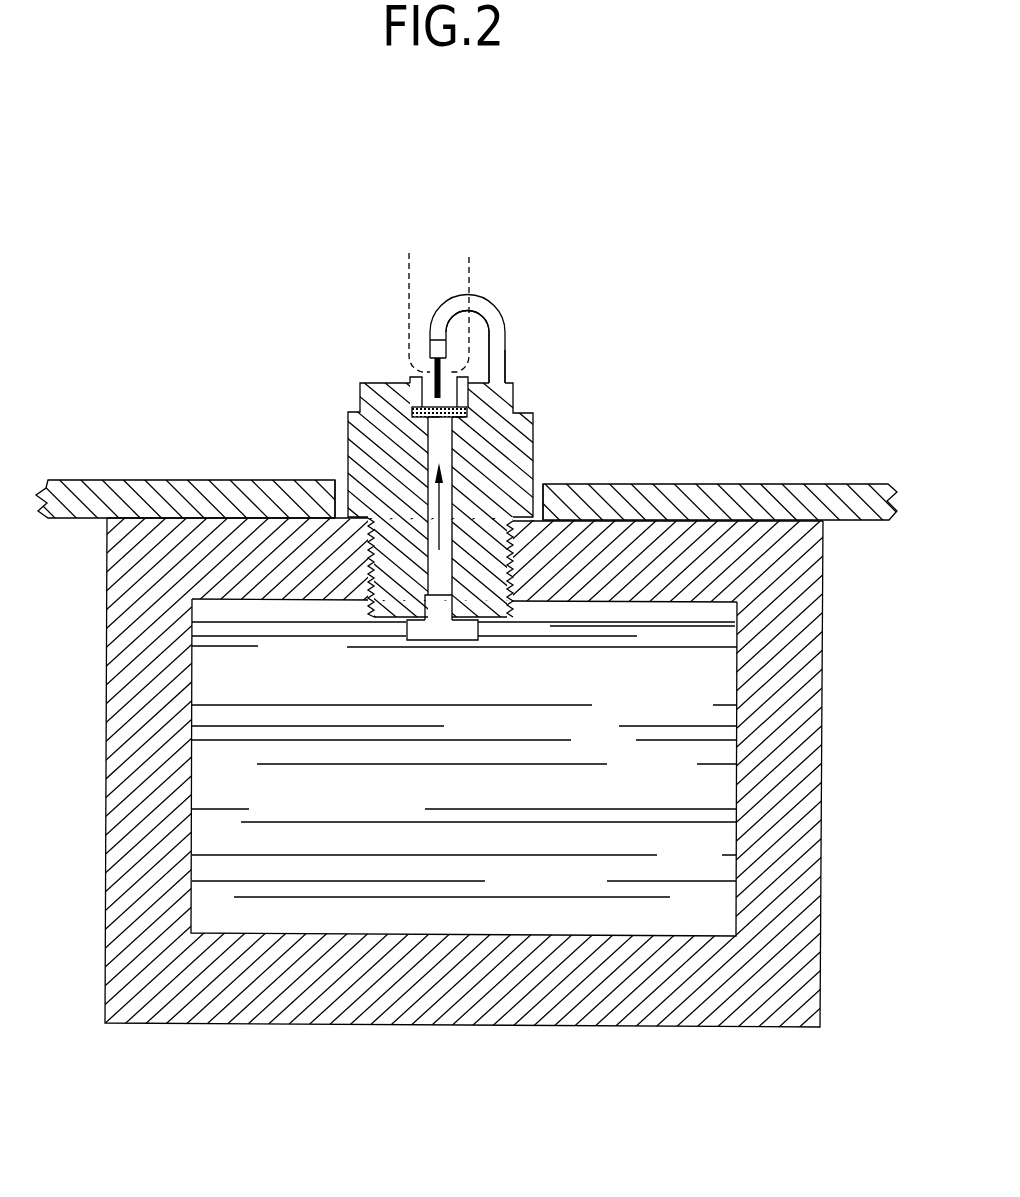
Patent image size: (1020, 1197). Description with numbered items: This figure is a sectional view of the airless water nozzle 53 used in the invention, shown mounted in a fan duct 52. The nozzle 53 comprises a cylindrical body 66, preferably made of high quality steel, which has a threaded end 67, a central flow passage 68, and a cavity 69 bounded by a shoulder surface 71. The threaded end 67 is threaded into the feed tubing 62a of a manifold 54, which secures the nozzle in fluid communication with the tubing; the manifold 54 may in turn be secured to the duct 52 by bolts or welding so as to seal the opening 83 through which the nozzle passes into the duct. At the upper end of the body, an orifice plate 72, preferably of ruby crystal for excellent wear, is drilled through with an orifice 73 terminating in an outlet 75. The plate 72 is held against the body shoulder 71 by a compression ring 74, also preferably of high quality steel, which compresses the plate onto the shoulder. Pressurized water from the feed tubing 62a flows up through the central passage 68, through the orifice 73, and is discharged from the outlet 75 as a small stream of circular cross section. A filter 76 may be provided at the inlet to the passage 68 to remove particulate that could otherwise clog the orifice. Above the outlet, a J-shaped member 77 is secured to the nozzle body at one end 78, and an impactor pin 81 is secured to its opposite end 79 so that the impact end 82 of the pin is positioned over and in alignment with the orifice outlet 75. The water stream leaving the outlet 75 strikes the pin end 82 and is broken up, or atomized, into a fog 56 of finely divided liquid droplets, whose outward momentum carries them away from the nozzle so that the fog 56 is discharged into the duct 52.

The fan duct 52 is at (788, 485).
The airless nozzle 53 is at (274, 283).
The manifold 54 is at (823, 645).
The fog 56 is at (410, 303).
The feed tubing 62a is at (628, 604).
The cylindrical body 66 is at (363, 437).
The threaded end 67 is at (370, 570).
The central flow passage 68 is at (428, 490).
The cavity 69 is at (476, 405).
The shoulder surface 71 is at (468, 410).
The orifice plate 72 is at (468, 413).
The orifice 73 is at (362, 398).
The compression ring 74 is at (492, 350).
The outlet 75 is at (435, 400).
The filter 76 is at (423, 640).
The J-shaped member 77 is at (503, 300).
The end 78 is at (509, 383).
The opposite end 79 is at (435, 357).
The impactor pin 81 is at (452, 355).
The impact end 82 is at (443, 420).
The opening 83 is at (537, 505).